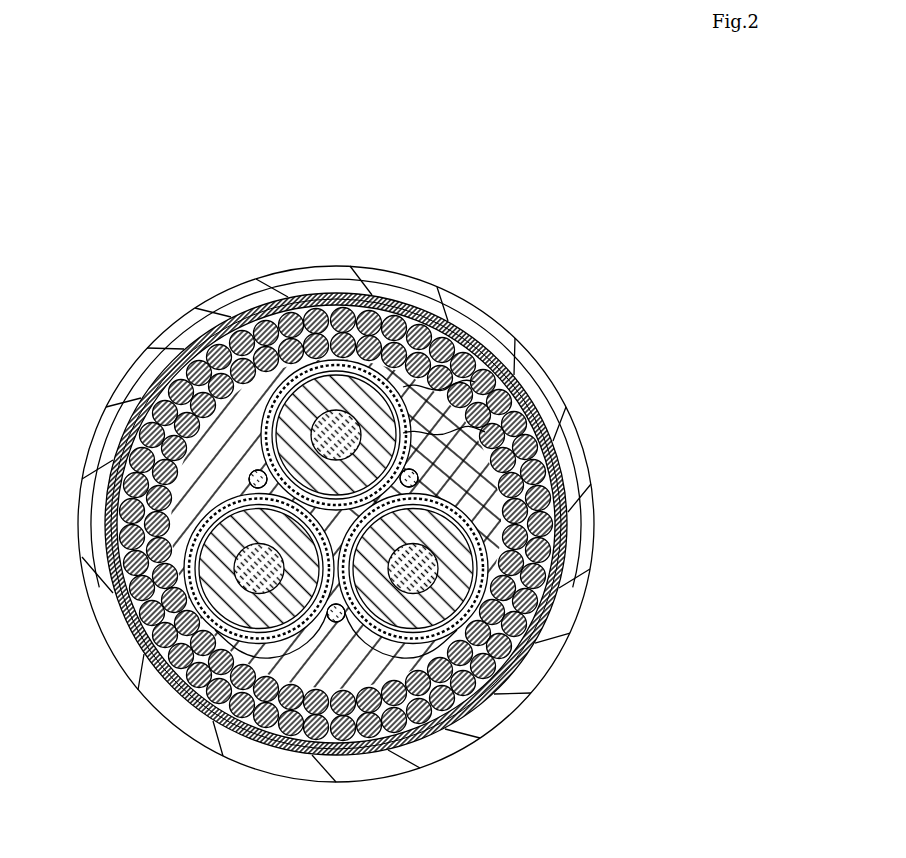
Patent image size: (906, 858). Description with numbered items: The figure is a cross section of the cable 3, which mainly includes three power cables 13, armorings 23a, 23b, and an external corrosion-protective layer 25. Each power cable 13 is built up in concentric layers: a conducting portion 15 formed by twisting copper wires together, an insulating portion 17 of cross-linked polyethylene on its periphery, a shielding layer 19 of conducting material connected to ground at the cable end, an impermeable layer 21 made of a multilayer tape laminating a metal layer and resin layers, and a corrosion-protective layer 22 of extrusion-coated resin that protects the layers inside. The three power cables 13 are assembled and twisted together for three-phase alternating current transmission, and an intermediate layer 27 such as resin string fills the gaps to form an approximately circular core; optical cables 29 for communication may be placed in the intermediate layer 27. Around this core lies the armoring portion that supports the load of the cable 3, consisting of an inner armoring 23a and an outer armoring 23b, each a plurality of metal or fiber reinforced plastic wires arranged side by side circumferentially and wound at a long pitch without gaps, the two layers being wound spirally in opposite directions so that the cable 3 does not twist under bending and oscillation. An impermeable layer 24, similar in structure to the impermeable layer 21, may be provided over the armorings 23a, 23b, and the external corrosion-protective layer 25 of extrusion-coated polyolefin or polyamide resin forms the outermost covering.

The cable 3 is at (399, 226).
The power cable 13 is at (443, 299).
The conducting portion 15 is at (342, 421).
The insulating portion 17 is at (405, 417).
The shielding layer 19 is at (405, 456).
The impermeable layer 21 is at (556, 495).
The corrosion-protective layer 22 is at (567, 549).
The armoring (inner circumference side) 23a is at (535, 645).
The armoring (outer circumference side) 23b is at (512, 672).
The impermeable layer 24 is at (158, 680).
The external corrosion-protective layer 25 is at (318, 760).
The intermediate layer 27 is at (407, 738).
The optical cable 29 is at (257, 645).